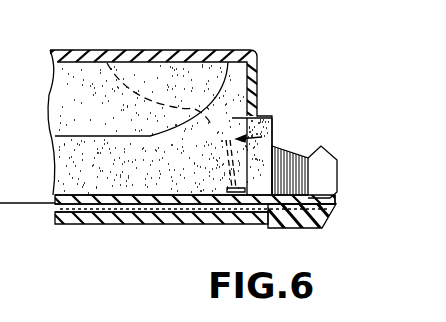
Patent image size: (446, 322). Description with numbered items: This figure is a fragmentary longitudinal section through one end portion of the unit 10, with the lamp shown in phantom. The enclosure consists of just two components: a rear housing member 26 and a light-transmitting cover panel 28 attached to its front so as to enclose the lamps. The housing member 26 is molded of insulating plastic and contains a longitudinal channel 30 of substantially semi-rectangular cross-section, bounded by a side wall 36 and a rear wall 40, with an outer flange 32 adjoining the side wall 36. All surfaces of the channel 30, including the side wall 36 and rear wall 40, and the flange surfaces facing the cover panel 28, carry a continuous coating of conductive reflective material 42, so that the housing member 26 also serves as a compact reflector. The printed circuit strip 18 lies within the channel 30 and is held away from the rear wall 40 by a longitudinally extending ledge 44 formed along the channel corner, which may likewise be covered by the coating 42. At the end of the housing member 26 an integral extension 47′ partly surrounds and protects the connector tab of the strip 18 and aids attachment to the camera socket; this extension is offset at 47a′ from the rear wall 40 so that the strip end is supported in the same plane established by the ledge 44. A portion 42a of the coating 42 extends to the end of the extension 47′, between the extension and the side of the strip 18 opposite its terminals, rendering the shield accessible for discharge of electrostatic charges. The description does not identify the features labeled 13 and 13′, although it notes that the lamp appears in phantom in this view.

The unit 10 is at (225, 38).
The light-transmitting cover panel 28 is at (76, 50).
The core section 13 is at (132, 48).
The core section 13′ is at (168, 76).
The outer flange 32 is at (28, 122).
The side wall 36 is at (258, 116).
The longitudinal channel 30 is at (272, 128).
The integral extension 47′ is at (322, 160).
The printed circuit strip 18 is at (334, 186).
The coating extension portion 42a is at (333, 199).
The offset 47a′ is at (289, 213).
The continuous coating of conductive reflective material 42 is at (218, 209).
The ledge 44 is at (167, 208).
The rear housing member 26 is at (100, 225).
The rear wall 40 is at (58, 208).